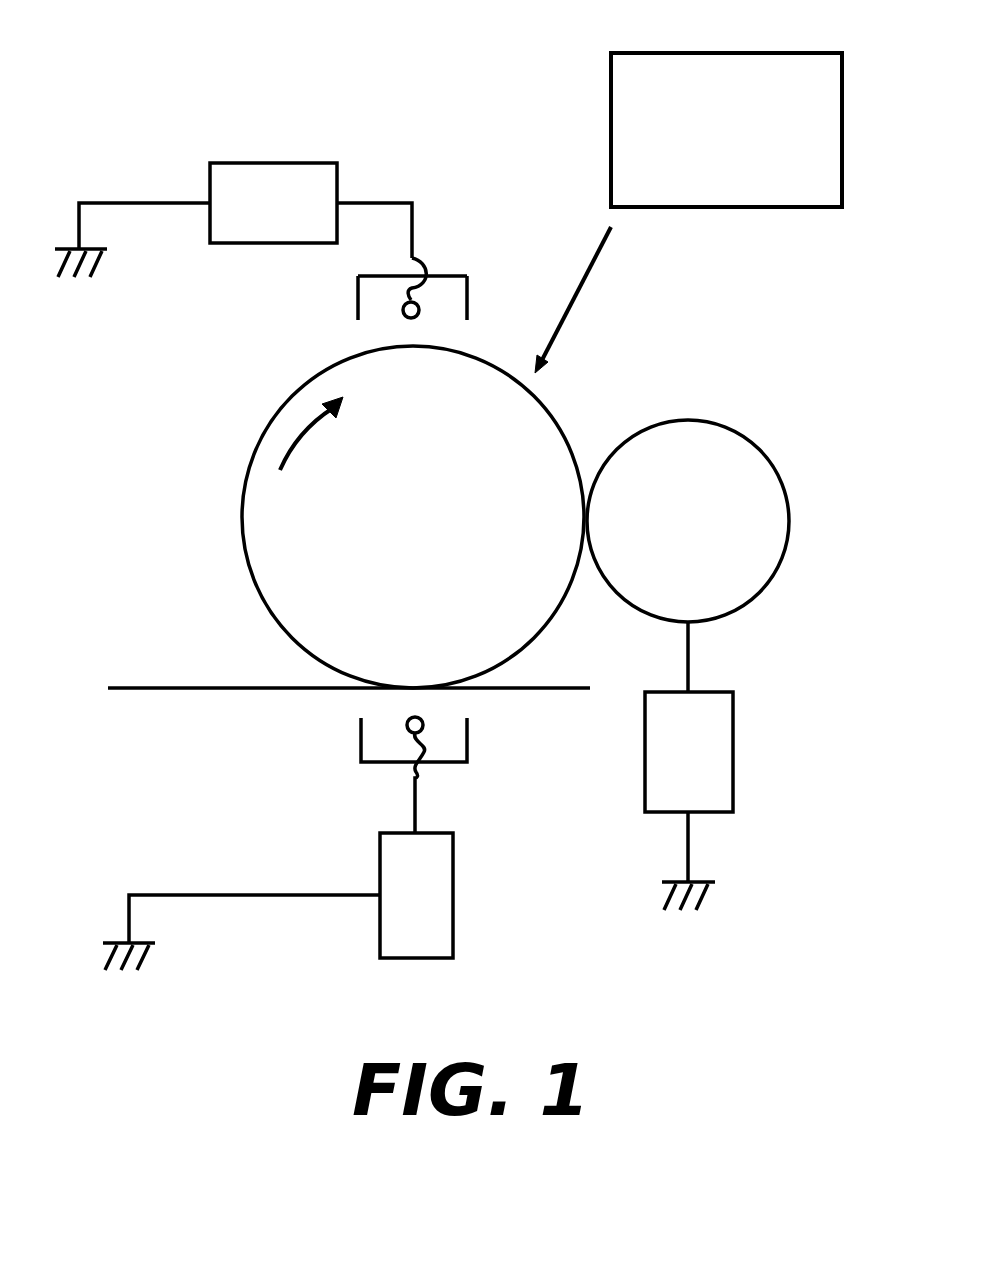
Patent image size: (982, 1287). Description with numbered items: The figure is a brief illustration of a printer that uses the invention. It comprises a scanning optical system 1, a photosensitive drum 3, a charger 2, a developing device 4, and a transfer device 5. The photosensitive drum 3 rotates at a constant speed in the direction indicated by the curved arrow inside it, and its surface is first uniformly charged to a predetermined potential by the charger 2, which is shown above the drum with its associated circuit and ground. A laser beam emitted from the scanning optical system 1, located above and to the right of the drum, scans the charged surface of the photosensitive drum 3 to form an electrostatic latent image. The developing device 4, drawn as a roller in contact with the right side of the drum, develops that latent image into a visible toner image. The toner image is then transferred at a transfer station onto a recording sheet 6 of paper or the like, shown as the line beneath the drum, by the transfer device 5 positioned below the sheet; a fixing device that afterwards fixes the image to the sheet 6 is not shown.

The scanning optical system 1 is at (712, 53).
The charger 2 is at (358, 299).
The photosensitive drum 3 is at (249, 458).
The developing device 4 is at (712, 420).
The transfer device 5 is at (453, 764).
The recording sheet 6 is at (228, 690).